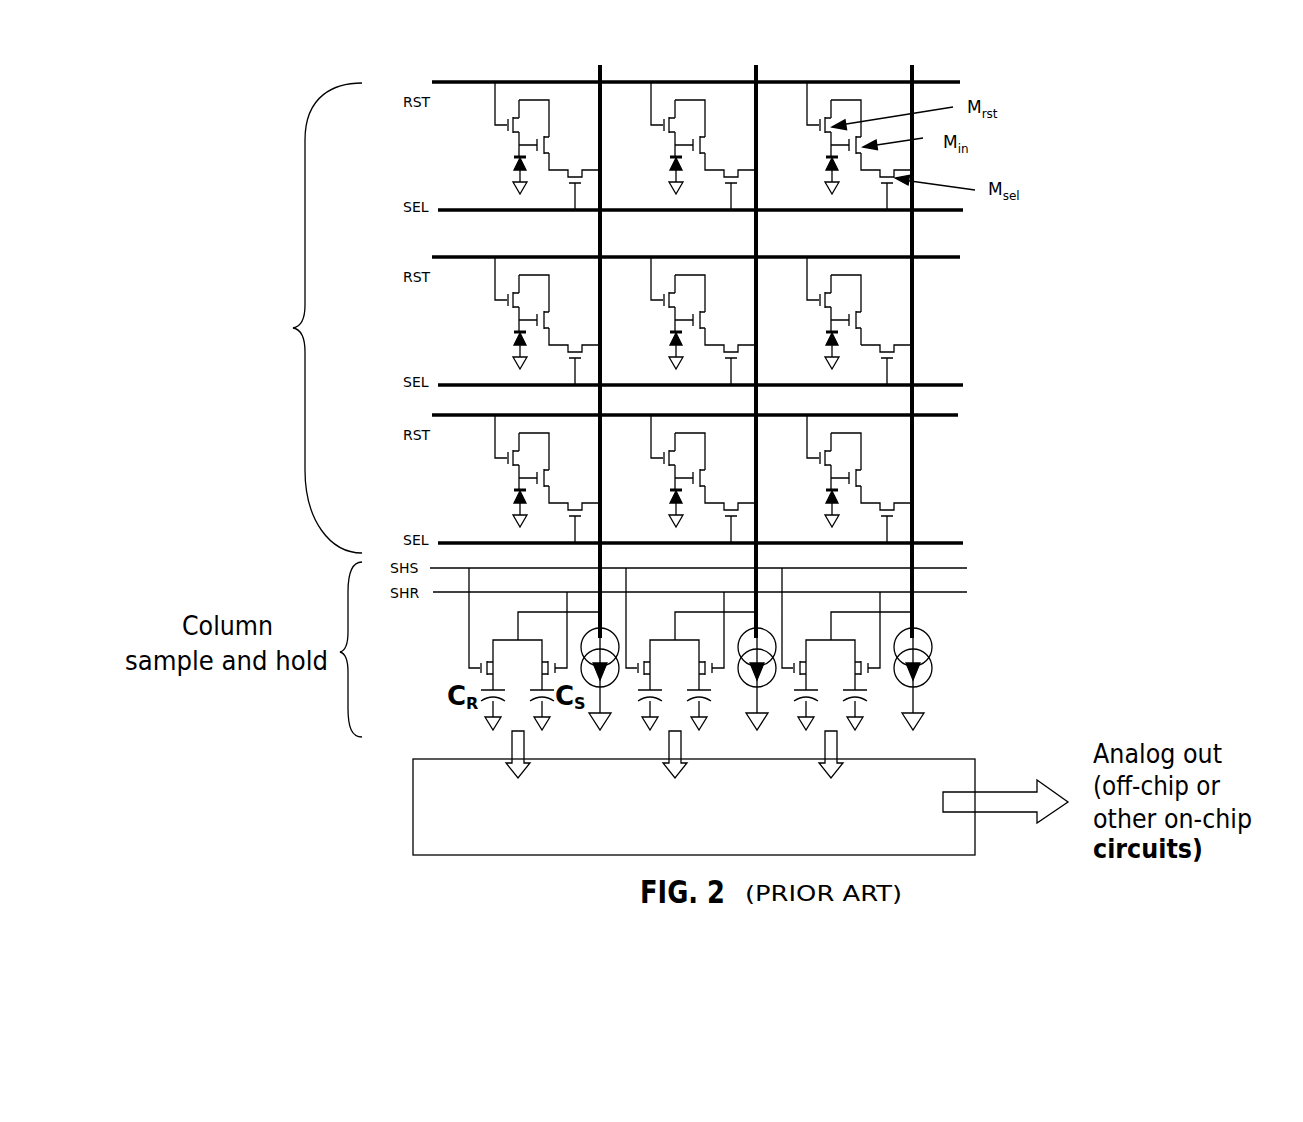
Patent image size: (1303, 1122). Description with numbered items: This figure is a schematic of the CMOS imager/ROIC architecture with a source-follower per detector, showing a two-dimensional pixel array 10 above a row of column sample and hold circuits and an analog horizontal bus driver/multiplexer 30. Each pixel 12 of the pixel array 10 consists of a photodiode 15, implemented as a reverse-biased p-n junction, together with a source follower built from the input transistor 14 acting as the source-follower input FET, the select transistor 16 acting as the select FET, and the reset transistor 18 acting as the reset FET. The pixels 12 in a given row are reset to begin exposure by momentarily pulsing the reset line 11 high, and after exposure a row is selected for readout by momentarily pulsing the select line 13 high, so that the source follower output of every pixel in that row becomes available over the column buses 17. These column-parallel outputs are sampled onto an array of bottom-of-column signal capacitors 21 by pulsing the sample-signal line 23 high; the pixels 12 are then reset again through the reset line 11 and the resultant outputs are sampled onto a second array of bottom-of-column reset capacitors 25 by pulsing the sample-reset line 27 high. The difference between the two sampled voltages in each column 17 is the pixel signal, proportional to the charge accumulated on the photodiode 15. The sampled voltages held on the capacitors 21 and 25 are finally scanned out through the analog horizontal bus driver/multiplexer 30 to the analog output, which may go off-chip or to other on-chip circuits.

The pixel array 10 is at (1000, 386).
The line RST 11 is at (457, 82).
The pixel 12 is at (873, 325).
The line SEL 13 is at (463, 210).
The transistor Min 14 is at (855, 318).
The photodiode 15 is at (822, 343).
The transistor Msel 16 is at (883, 347).
The column bus 17 is at (912, 468).
The transistor Mrst 18 is at (896, 306).
The capacitor Cs 21 is at (560, 710).
The line SHS 23 is at (947, 568).
The capacitor Cr 25 is at (485, 692).
The line SHR 27 is at (947, 592).
The analog horizontal bus driver and multiplexer circuit 30 is at (413, 803).